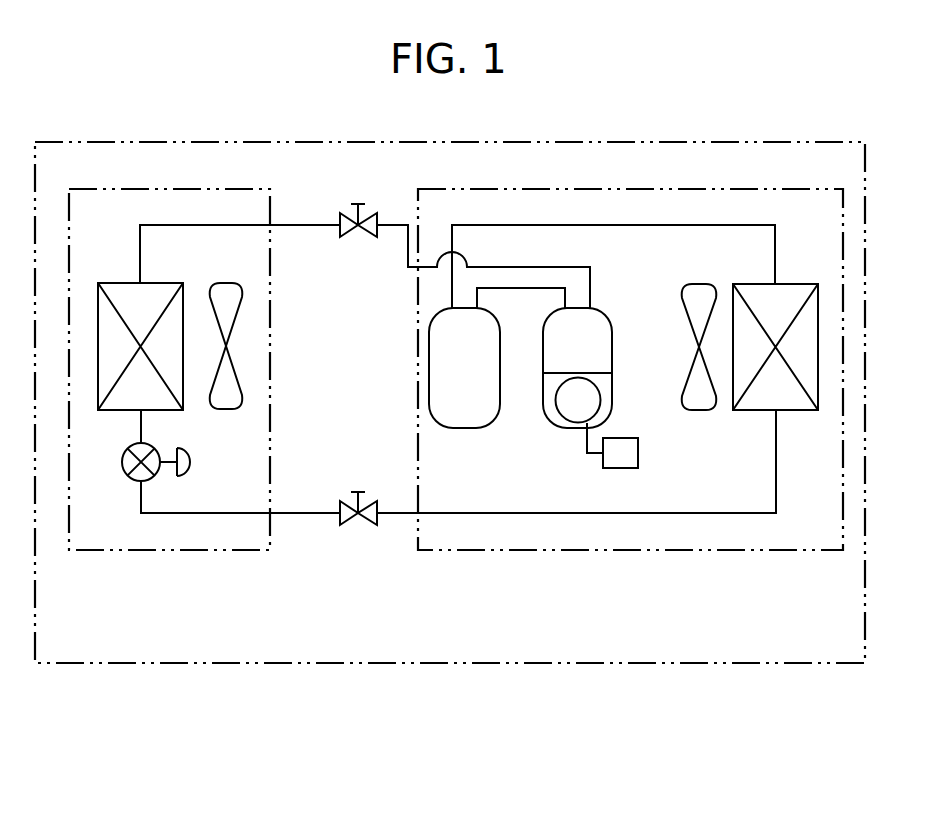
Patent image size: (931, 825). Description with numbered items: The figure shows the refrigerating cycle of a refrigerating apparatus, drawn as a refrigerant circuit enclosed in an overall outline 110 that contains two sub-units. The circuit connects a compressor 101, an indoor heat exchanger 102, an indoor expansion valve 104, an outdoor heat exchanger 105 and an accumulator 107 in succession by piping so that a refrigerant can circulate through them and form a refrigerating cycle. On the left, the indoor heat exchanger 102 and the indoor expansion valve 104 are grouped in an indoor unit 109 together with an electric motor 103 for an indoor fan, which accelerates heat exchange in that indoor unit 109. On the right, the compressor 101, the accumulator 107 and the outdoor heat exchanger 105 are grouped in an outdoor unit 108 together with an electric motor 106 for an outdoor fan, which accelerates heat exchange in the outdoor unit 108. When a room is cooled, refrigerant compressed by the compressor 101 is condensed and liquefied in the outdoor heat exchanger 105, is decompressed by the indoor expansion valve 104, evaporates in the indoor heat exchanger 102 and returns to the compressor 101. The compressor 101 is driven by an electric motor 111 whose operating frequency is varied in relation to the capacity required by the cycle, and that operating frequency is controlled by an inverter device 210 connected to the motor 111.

The compressor 101 is at (570, 428).
The indoor heat exchanger 102 is at (125, 283).
The electric motor for an indoor fan 103 is at (235, 320).
The indoor expansion valve 104 is at (123, 473).
The outdoor heat exchanger 105 is at (797, 410).
The electric motor for an outdoor fan 106 is at (700, 411).
The accumulator 107 is at (458, 428).
The outdoor unit 108 is at (458, 550).
The indoor unit 109 is at (163, 550).
The air conditioner 110 is at (340, 663).
The electric motor 111 is at (596, 387).
The inverter device 210 is at (622, 468).